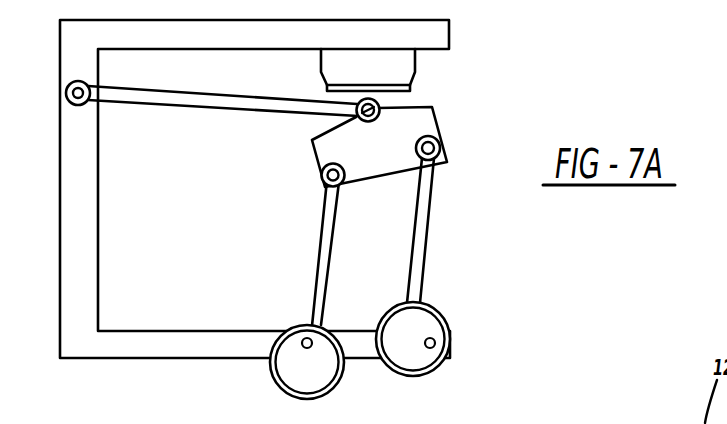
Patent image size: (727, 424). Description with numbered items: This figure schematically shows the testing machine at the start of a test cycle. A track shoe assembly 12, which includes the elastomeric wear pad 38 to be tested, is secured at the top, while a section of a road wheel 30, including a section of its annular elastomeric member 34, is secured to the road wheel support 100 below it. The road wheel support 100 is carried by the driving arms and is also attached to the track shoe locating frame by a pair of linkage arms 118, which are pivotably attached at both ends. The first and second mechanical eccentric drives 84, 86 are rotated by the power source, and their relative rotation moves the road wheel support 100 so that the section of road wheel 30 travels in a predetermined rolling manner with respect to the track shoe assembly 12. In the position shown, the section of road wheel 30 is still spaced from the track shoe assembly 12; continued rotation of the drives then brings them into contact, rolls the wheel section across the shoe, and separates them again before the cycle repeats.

The track shoe assembly 12 is at (398, 62).
The elastomeric wear pad 38 is at (400, 88).
The road wheel 30 is at (397, 125).
The annular elastomeric member 34 is at (318, 134).
The linkage arms 118 is at (135, 98).
The road wheel support 100 is at (378, 163).
The first mechanical eccentric drive 84 is at (295, 373).
The second mechanical eccentric drive 86 is at (422, 323).